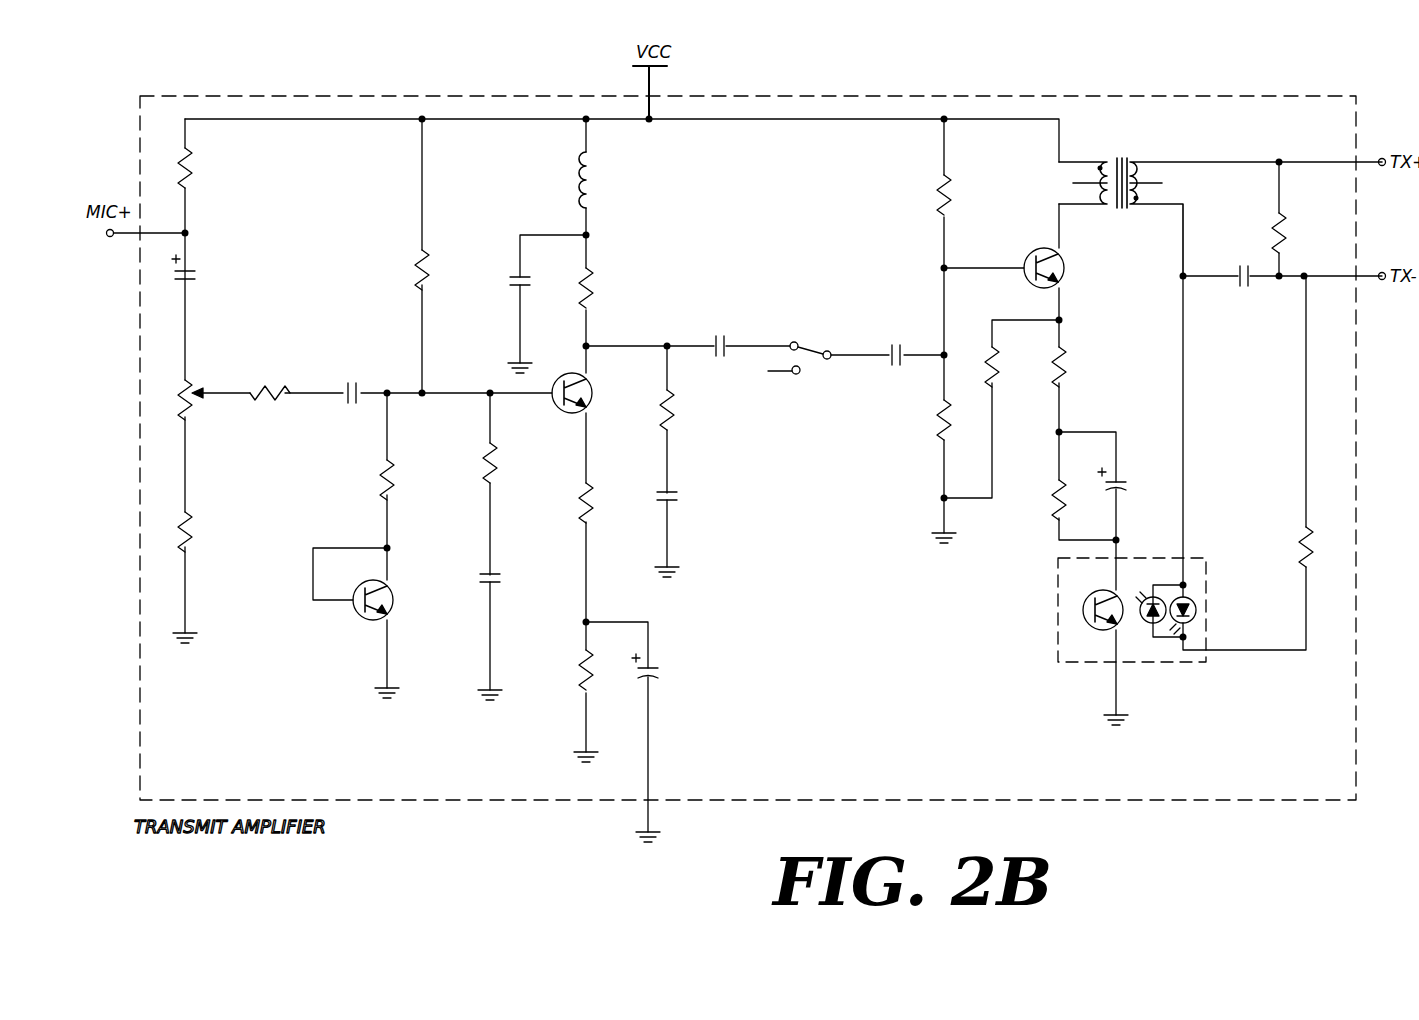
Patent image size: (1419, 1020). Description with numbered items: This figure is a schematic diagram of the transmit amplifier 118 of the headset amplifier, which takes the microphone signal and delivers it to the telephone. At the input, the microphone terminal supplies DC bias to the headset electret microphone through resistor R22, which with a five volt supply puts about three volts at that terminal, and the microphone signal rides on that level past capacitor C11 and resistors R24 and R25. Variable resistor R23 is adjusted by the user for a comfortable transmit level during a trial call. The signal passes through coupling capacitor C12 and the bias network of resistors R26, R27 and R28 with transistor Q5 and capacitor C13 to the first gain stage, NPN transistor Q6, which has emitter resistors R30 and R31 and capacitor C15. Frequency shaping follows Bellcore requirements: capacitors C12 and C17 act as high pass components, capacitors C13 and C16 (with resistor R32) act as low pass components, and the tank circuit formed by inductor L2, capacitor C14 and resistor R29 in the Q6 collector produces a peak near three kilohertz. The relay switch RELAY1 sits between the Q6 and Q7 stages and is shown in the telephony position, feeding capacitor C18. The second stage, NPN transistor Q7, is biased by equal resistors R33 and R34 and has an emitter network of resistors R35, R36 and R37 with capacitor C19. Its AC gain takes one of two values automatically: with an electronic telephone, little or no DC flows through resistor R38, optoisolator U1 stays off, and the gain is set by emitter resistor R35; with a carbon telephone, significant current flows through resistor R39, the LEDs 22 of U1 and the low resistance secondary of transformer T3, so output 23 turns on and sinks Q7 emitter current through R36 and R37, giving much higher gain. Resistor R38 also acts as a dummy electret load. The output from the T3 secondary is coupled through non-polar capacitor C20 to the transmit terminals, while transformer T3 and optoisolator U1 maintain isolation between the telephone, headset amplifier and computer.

The transmit amplifier 118 is at (1155, 800).
The optoisolator LEDs 22 is at (1196, 612).
The optoisolator output 23 is at (1096, 628).
The resistor R22 is at (209, 168).
The variable resistor R23 is at (195, 390).
The resistor 680 R24 is at (184, 520).
The resistor 10K R25 is at (256, 388).
The resistor 20K R26 is at (382, 465).
The resistor 20K R27 is at (418, 258).
The resistor 10 R28 is at (488, 449).
The resistor R29 is at (594, 272).
The resistor 22 R30 is at (584, 488).
The resistor 390 R31 is at (584, 656).
The resistor 10 R32 is at (674, 400).
The resistor R33 is at (940, 183).
The resistor R34 is at (921, 418).
The emitter resistor R35 is at (1014, 367).
The resistor R36 is at (1079, 367).
The resistor R37 is at (1052, 495).
The resistor R38 is at (1282, 218).
The resistor R39 is at (1300, 536).
The capacitor 100uF 10V C11 is at (201, 275).
The high pass component C12 is at (346, 384).
The low pass component C13 is at (486, 576).
The capacitor C14 is at (512, 281).
The capacitor 22uF C15 is at (660, 667).
The low pass component C16 is at (678, 490).
The high pass component C17 is at (714, 344).
The capacitor 1uF C18 is at (892, 348).
The capacitor 100uF C19 is at (1122, 480).
The non-polar capacitor C20 is at (1238, 274).
The transistor MMBT6428 Q5 is at (372, 583).
The NPN transistor Q6 is at (580, 378).
The NPN transistor Q7 is at (1040, 251).
The inductor L2 is at (582, 170).
The transformer T3 is at (1220, 205).
The optoisolator U1 is at (1100, 610).
The relay switch RELAY1 is at (816, 372).